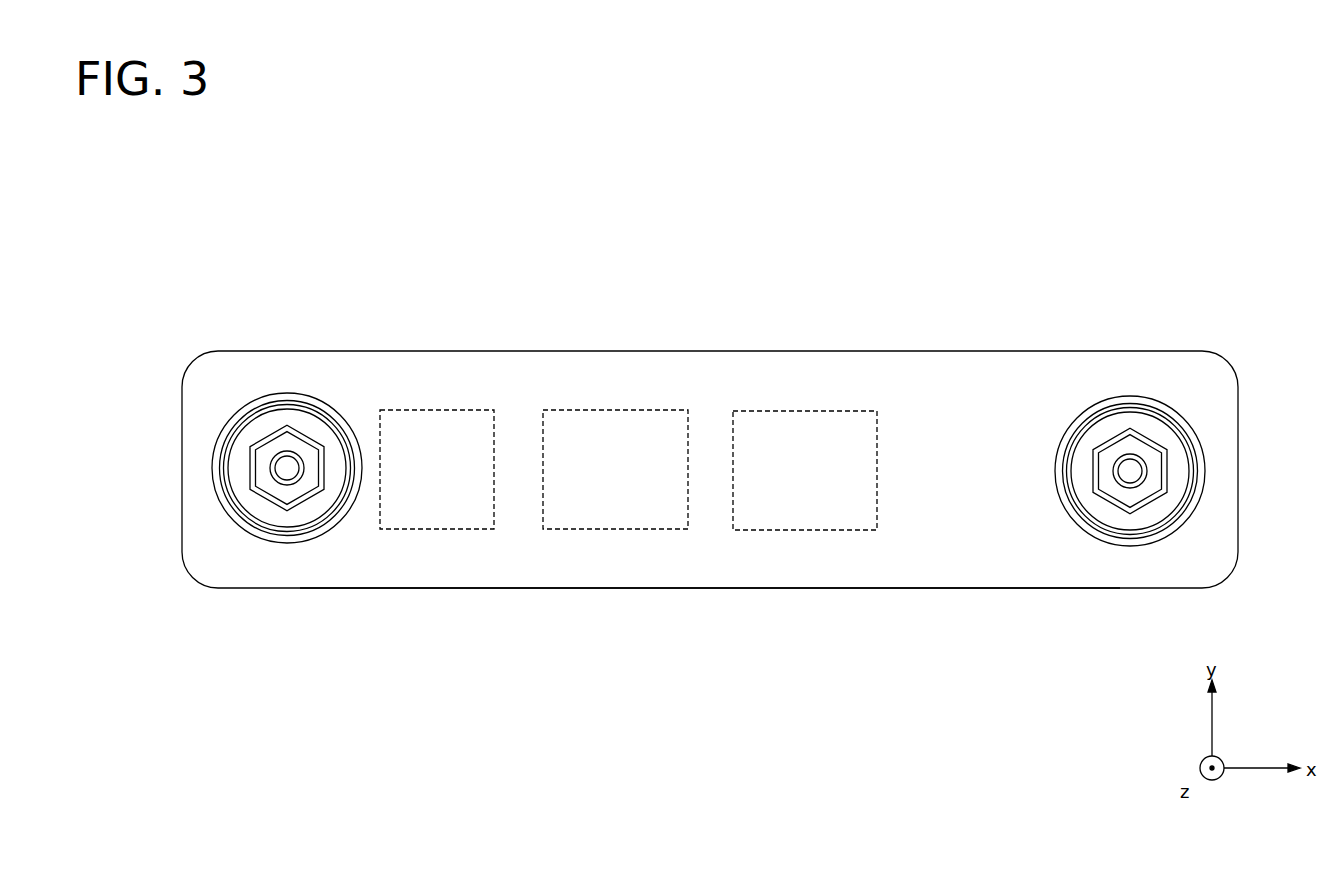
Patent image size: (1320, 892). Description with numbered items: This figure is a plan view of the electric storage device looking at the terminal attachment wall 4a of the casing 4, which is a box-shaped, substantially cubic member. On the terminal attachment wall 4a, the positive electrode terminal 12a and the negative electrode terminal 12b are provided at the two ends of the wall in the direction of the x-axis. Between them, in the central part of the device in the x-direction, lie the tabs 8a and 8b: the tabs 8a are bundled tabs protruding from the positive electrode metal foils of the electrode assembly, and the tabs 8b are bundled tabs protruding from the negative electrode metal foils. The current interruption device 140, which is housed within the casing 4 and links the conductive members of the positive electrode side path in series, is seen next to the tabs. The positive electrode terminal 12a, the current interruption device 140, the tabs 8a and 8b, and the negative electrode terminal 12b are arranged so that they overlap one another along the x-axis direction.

The casing 4 is at (963, 352).
The terminal attachment wall 4a is at (948, 571).
The positive electrode terminal 12a is at (294, 380).
The negative electrode terminal 12b is at (1137, 380).
The current interruption device 140 is at (437, 409).
The positive electrode tab 8a is at (613, 409).
The negative electrode tab 8b is at (803, 410).